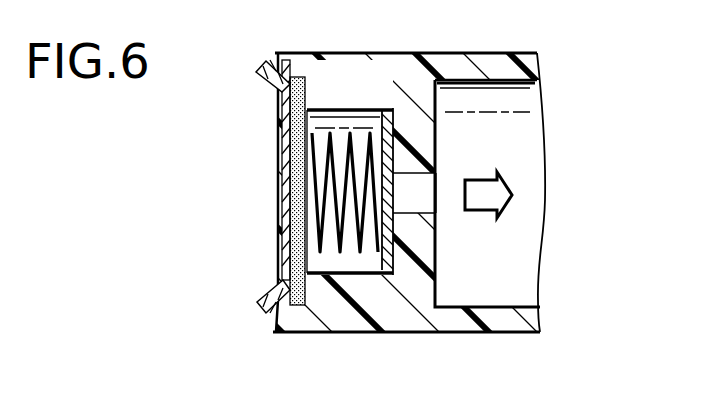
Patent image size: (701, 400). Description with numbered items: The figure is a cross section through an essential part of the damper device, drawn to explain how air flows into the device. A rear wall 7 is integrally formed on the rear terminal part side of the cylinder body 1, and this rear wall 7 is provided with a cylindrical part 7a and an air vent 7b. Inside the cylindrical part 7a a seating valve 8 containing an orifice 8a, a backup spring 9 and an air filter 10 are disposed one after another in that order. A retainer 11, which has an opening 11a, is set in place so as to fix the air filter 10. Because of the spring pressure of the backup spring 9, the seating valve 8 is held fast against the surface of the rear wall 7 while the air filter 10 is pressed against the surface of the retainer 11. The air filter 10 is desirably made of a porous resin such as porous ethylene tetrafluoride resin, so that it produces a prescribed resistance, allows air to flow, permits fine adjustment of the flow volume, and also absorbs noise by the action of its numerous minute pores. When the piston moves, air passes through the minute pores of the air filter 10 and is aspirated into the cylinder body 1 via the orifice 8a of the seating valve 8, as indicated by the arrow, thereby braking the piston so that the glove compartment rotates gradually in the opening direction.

The cylinder body 1 is at (507, 63).
The rear wall 7 is at (422, 125).
The cylindrical part 7a is at (337, 60).
The air vent 7b is at (422, 200).
The seating valve 8 is at (392, 58).
The orifice 8a is at (400, 192).
The backup spring 9 is at (352, 256).
The air filter 10 is at (282, 250).
The retainer 11 is at (282, 113).
The opening 11a is at (282, 185).